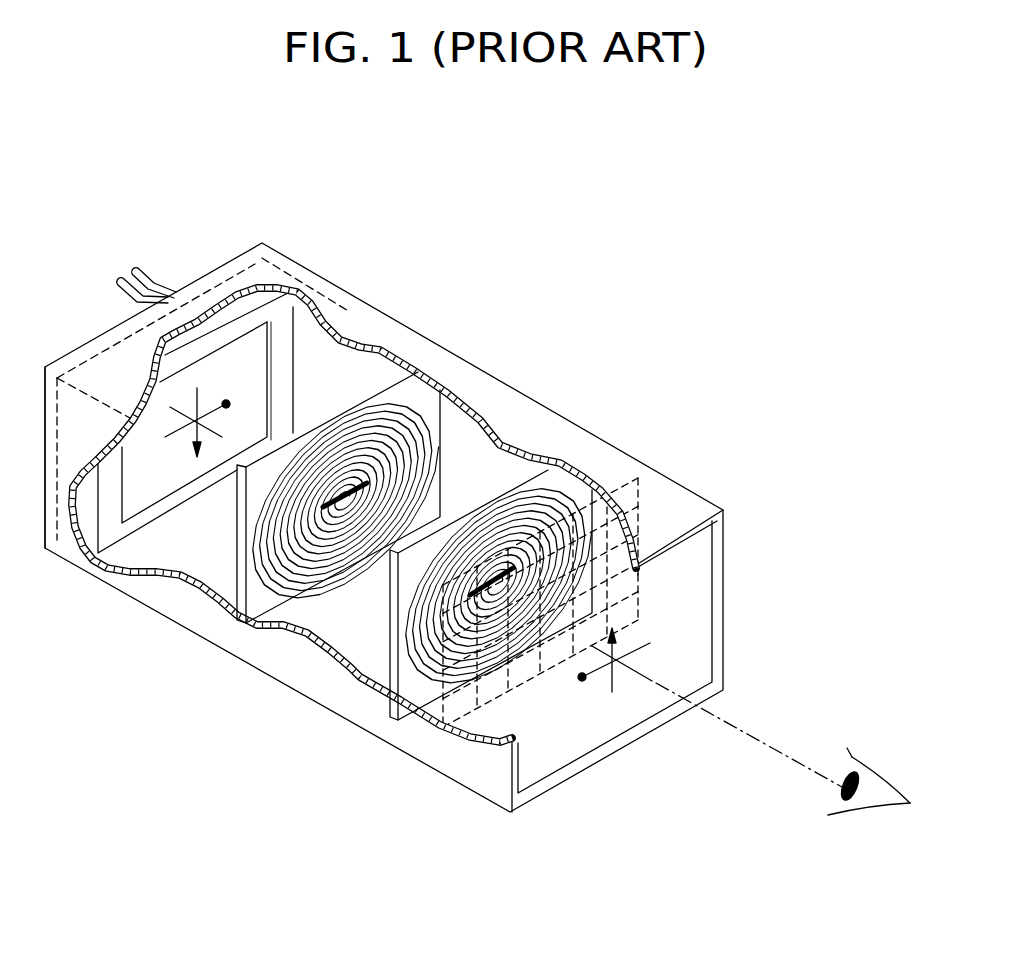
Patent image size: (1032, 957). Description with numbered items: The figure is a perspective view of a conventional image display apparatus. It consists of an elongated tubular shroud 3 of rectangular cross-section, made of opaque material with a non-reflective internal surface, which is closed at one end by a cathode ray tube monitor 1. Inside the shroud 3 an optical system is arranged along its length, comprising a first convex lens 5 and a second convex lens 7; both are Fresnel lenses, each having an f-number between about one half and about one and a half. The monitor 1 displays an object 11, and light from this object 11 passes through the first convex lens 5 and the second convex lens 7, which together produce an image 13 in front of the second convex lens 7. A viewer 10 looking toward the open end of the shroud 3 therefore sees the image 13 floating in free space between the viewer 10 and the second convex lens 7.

The cathode ray tube monitor 1 is at (88, 522).
The tubular shroud 3 is at (660, 493).
The first convex lens 5 is at (270, 605).
The second convex lens 7 is at (432, 690).
The viewer 10 is at (866, 780).
The object 11 is at (196, 428).
The image 13 is at (614, 682).